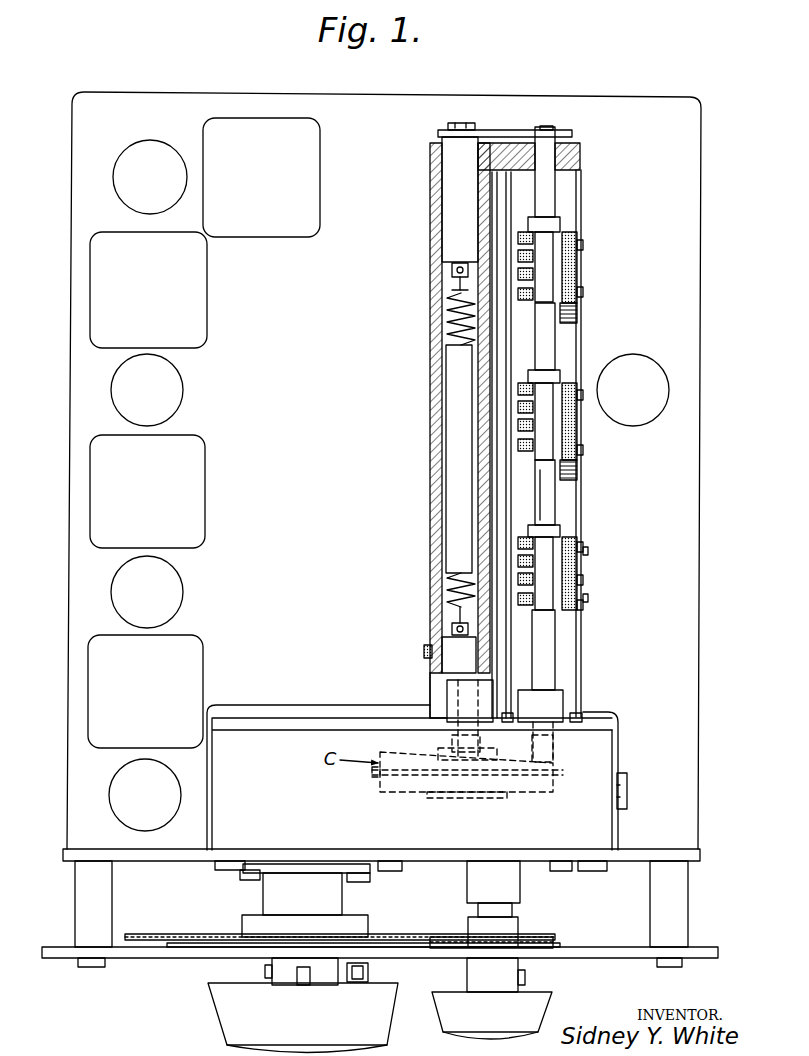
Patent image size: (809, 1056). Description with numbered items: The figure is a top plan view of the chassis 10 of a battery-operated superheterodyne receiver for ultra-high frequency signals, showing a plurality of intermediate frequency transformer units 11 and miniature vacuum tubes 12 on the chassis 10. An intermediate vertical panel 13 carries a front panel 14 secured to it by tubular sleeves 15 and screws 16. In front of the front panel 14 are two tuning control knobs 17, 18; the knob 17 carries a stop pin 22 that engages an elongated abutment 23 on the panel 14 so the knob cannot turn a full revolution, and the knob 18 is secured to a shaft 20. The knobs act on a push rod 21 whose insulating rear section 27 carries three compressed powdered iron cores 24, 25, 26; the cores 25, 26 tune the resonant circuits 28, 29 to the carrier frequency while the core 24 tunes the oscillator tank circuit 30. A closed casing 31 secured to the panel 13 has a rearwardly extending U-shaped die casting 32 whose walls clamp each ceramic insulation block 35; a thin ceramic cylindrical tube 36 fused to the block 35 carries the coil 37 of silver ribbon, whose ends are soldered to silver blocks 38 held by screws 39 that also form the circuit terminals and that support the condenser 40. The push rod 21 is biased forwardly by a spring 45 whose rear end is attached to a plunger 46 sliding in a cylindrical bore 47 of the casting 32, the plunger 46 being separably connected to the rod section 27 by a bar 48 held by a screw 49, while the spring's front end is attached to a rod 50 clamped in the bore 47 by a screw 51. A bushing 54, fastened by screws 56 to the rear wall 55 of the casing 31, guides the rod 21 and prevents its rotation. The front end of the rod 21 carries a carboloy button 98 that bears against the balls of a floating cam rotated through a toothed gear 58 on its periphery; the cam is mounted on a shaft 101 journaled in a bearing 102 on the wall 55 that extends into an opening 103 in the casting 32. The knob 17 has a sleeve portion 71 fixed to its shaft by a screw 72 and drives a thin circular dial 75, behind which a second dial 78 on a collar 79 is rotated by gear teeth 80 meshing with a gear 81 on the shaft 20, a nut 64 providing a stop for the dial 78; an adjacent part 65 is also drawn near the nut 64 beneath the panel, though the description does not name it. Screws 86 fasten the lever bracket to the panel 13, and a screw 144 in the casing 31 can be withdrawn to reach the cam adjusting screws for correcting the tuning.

The chassis 10 is at (189, 99).
The intermediate frequency transformer units 11 is at (217, 225).
The miniature vacuum tubes 12 is at (125, 166).
The intermediate vertical panel 13 is at (632, 861).
The front panel 14 is at (568, 960).
The tubular sleeves 15 is at (77, 886).
The screws 16 is at (80, 963).
The tuning control knob 17 is at (223, 1026).
The tuning control knob 18 is at (446, 1016).
The shaft 20 is at (503, 912).
The push rod 21 is at (546, 661).
The stop pin 22 is at (302, 986).
The elongated abutment 23 is at (368, 971).
The compressed powdered iron core 24 is at (556, 531).
The compressed powdered iron core 25 is at (560, 376).
The compressed powdered iron core 26 is at (562, 223).
The rear section 27 is at (545, 506).
The resonant circuit 28 is at (578, 393).
The resonant circuit 29 is at (571, 421).
The tank circuit 30 is at (581, 558).
The closed casing 31 is at (268, 735).
The die casting 32 is at (528, 190).
The block of ceramic insulation material 35 is at (580, 260).
The cylindrical tube 36 is at (518, 296).
The coil 37 is at (518, 250).
The silver blocks 38 is at (565, 546).
The screws 39 is at (582, 551).
The condenser 40 is at (576, 281).
The spring 45 is at (450, 336).
The plunger 46 is at (446, 204).
The cylindrical bore 47 is at (443, 453).
The bar 48 is at (507, 131).
The screw 49 is at (452, 124).
The rod 50 is at (452, 668).
The screw 51 is at (424, 651).
The bushing 54 is at (565, 701).
The rear wall 55 is at (316, 724).
The screws 56 is at (583, 718).
The toothed gear 58 is at (552, 774).
The nut 64 is at (263, 898).
The bracket 65 is at (245, 877).
The sleeve portion 71 is at (326, 986).
The screw 72 is at (265, 971).
The circular dial 75 is at (173, 948).
The second dial 78 is at (141, 932).
The collar 79 is at (294, 923).
The gear teeth 80 is at (413, 934).
The gear 81 is at (556, 945).
The screws 86 is at (390, 872).
The button 98 is at (548, 755).
The shaft 101 is at (450, 739).
The bearing 102 is at (483, 690).
The opening 103 is at (430, 680).
The screw 144 is at (628, 786).